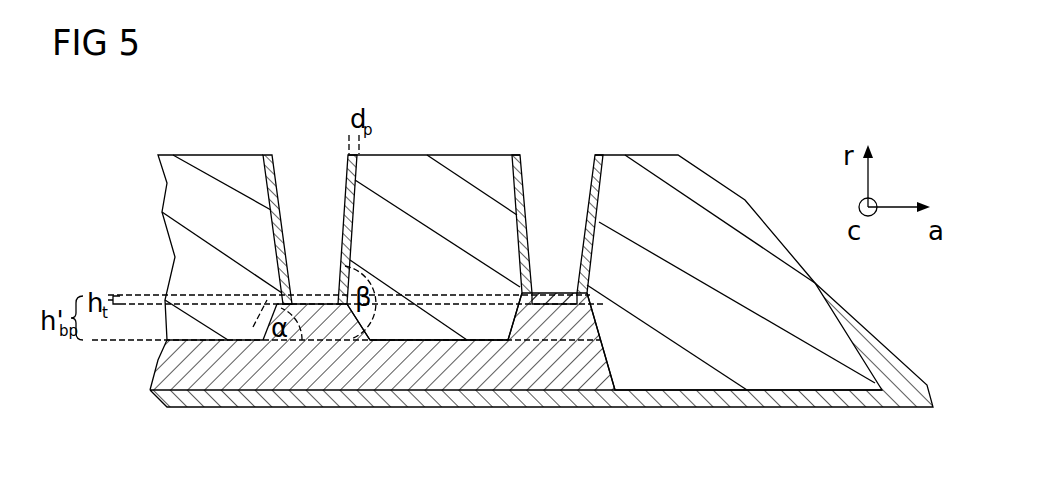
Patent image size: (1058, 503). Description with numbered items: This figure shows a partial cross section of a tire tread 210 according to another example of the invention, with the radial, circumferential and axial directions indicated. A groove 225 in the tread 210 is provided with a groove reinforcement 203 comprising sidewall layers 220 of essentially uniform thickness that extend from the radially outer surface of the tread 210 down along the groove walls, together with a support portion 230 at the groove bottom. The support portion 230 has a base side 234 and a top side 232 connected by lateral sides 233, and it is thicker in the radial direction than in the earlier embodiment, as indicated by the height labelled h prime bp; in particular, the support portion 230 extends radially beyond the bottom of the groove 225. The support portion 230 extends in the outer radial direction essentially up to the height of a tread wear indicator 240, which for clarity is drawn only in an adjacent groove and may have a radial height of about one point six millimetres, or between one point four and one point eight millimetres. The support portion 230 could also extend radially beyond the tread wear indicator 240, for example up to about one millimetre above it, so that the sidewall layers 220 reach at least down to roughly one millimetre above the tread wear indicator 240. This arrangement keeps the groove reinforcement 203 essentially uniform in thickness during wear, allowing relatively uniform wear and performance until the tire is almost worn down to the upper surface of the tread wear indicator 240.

The groove reinforcement 203 is at (558, 362).
The tire tread 210 is at (425, 145).
The sidewall layers 220 is at (344, 183).
The groove 225 is at (306, 302).
The support portion 230 is at (282, 352).
The top side 232 is at (327, 302).
The lateral sides 233 is at (283, 300).
The base side 234 is at (337, 344).
The tread wear indicator 240 is at (557, 292).